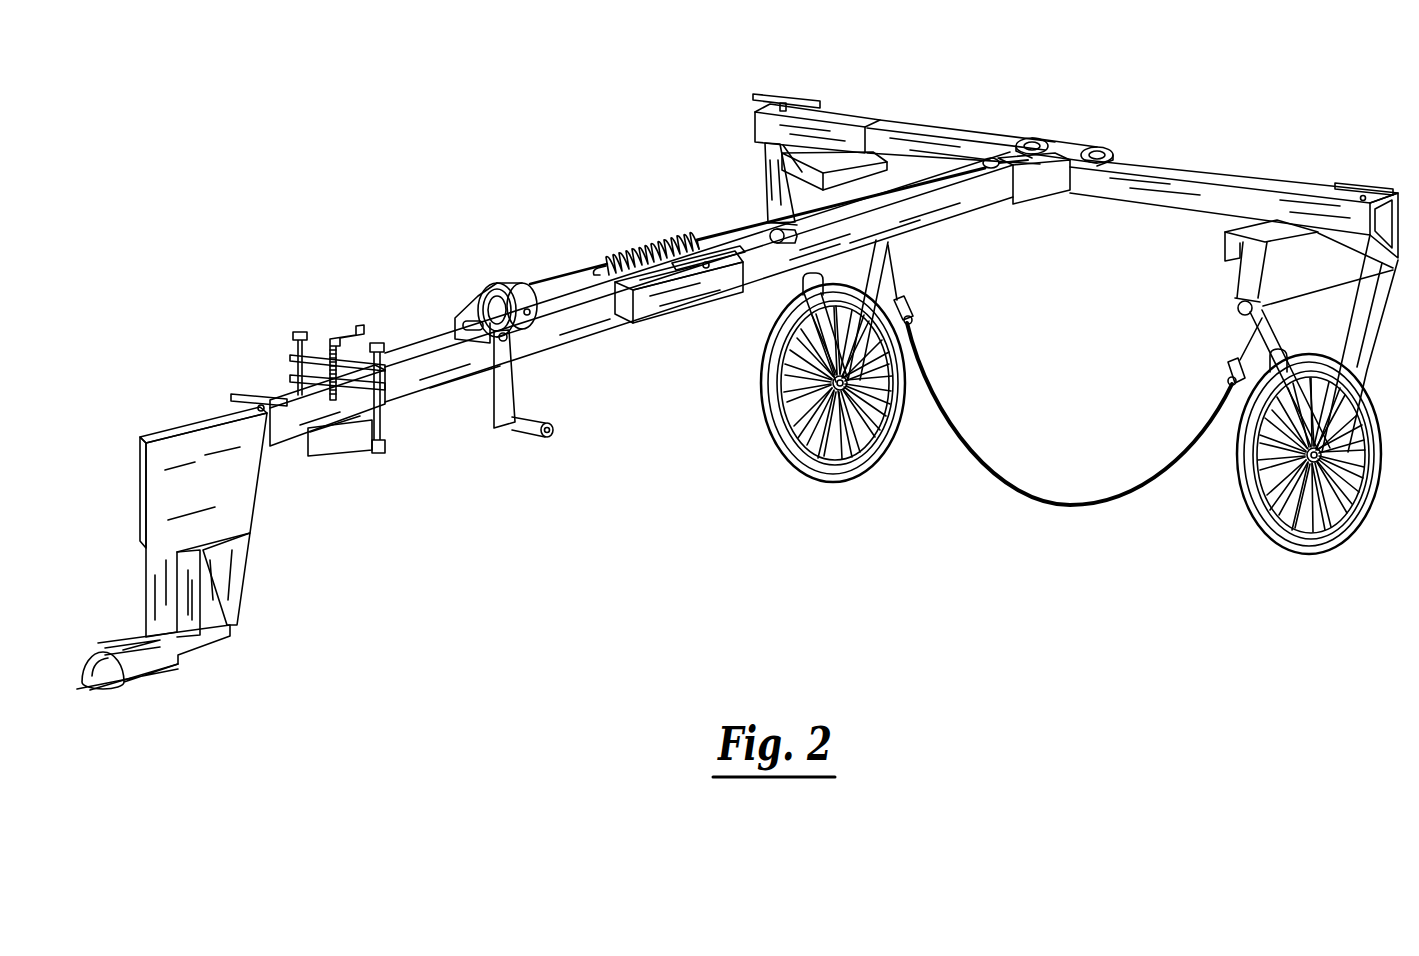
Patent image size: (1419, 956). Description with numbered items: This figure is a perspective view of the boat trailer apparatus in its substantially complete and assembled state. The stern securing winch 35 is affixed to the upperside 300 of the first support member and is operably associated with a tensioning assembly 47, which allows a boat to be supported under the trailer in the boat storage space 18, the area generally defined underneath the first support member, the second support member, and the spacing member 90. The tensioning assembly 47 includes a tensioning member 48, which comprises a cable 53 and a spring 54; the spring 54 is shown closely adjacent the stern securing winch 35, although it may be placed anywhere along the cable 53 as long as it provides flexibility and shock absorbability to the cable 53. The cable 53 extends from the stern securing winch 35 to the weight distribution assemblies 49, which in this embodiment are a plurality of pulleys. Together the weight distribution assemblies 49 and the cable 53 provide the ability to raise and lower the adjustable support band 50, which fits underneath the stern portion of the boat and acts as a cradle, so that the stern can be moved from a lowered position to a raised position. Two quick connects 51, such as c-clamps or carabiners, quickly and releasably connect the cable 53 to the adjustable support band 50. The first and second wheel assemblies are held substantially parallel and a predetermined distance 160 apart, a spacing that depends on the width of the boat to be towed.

The upperside of the first support member 300 is at (573, 383).
The stern securing winch 35 is at (500, 283).
The tensioning assembly 47 is at (547, 280).
The tensioning member 48 is at (650, 240).
The cable 53 is at (583, 290).
The spring 54 is at (673, 264).
The predetermined distance 160 is at (1075, 173).
The weight distribution assemblies 49 is at (1081, 124).
The spacing member 90 is at (1208, 165).
The boat storage space 18 is at (742, 419).
The quick connects 51 is at (908, 300).
The adjustable support band 50 is at (970, 444).